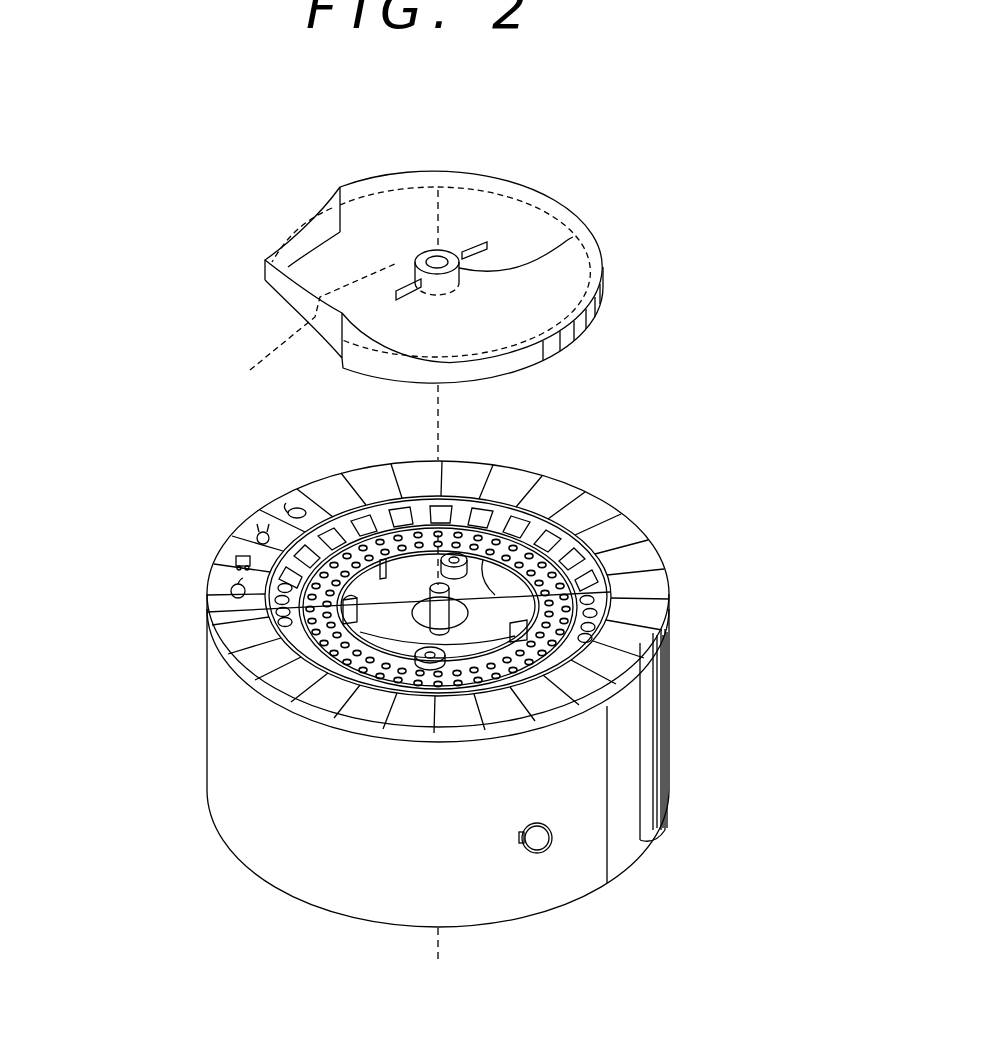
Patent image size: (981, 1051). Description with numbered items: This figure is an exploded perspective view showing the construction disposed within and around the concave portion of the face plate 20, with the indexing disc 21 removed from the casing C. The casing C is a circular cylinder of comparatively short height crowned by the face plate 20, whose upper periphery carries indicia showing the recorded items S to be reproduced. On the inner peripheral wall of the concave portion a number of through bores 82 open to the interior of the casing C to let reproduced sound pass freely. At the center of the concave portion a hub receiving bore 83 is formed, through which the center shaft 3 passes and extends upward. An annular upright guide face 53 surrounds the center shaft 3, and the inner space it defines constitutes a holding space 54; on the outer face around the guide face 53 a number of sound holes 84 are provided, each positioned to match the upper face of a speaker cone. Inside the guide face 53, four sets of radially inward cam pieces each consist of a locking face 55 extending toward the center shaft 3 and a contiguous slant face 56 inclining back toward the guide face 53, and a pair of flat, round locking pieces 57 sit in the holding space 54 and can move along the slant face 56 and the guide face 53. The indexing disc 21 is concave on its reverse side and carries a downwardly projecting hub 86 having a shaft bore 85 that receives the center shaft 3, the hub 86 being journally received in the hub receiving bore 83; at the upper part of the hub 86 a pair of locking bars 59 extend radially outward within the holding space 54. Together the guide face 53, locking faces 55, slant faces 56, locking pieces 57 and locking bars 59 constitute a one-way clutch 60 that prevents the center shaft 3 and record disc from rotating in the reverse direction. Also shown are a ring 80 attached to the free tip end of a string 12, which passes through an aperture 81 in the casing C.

The center shaft 3 is at (210, 612).
The string 12 is at (530, 850).
The face plate 20 is at (635, 538).
The indexing disc 21 is at (538, 240).
The guide face 53 is at (495, 560).
The holding space 54 is at (607, 552).
The locking face 55 is at (530, 655).
The slant face 56 is at (365, 635).
The locking piece 57 is at (420, 660).
The locking bar 59 is at (470, 247).
The one-way clutch 60 is at (222, 386).
The ring 80 is at (550, 850).
The aperture 81 is at (520, 840).
The through bore 82 is at (270, 582).
The hub receiving bore 83 is at (612, 657).
The sound hole 84 is at (610, 592).
The shaft bore 85 is at (447, 252).
The hub 86 is at (573, 237).
The casing C is at (630, 812).
The recorded items S is at (220, 560).